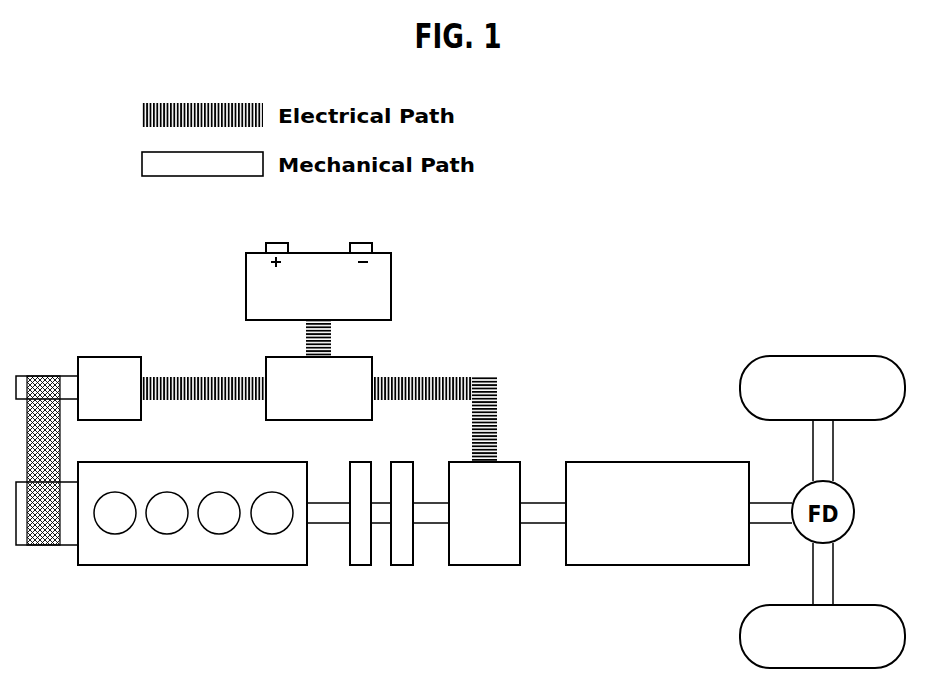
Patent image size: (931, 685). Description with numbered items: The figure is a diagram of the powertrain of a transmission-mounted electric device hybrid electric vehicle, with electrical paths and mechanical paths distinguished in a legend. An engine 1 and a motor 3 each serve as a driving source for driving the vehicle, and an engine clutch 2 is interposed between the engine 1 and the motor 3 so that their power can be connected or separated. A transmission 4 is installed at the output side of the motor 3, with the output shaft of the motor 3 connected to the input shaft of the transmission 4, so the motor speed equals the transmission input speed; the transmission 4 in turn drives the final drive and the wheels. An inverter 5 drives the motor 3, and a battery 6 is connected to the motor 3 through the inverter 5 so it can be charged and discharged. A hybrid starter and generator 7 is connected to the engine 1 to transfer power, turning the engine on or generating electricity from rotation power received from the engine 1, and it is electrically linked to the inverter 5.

The engine 1 is at (193, 565).
The engine clutch 2 is at (402, 565).
The motor 3 is at (482, 565).
The transmission 4 is at (638, 565).
The inverter 5 is at (372, 357).
The battery 6 is at (391, 287).
The hybrid starter and generator (HSG) 7 is at (108, 357).